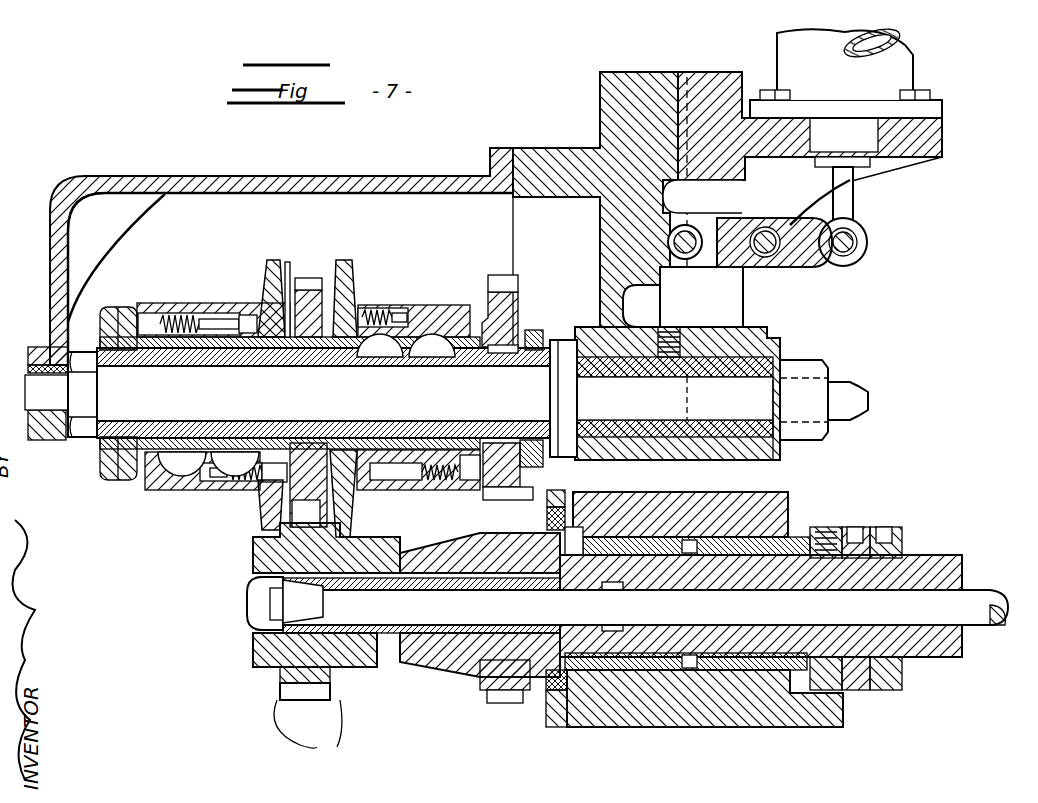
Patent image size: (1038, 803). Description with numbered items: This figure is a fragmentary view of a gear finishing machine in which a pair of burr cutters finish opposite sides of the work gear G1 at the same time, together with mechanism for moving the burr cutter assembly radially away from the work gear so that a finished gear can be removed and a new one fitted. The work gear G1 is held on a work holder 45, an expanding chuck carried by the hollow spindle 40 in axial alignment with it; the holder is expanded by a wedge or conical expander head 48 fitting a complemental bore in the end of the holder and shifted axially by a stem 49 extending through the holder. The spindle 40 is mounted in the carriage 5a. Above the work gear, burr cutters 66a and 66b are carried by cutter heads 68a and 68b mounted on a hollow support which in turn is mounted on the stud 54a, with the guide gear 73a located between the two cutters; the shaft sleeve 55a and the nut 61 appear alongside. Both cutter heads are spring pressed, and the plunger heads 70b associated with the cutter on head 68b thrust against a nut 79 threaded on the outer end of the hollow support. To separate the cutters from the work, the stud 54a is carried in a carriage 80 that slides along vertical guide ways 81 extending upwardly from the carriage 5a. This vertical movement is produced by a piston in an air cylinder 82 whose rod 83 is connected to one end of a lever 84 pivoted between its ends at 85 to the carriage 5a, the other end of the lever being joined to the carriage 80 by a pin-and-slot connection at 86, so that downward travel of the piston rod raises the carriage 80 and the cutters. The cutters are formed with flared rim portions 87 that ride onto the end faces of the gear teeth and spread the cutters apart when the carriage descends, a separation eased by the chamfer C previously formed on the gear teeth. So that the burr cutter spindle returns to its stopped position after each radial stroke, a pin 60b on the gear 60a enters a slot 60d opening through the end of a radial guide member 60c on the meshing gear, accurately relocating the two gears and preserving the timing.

The carriage 5a is at (720, 85).
The spindle 40 is at (727, 640).
The work holder 45 is at (367, 623).
The expander head 48 is at (270, 596).
The stem 49 is at (645, 607).
The stud 54a is at (324, 393).
The shaft sleeve 55a is at (240, 357).
The gear 60a is at (517, 297).
The pin 60b is at (530, 495).
The guide member 60c is at (583, 497).
The slot 60d is at (503, 480).
The nut 61 is at (490, 695).
The burr cutter 66a is at (355, 278).
The burr cutter 66b is at (266, 263).
The cutter head 68a is at (420, 295).
The cutter head 68b is at (200, 303).
The plunger heads 70b is at (150, 308).
The guide gear 73a is at (307, 280).
The nut 79 is at (115, 308).
The carriage 80 is at (600, 290).
The guide ways 81 is at (697, 80).
The air cylinder 82 is at (893, 77).
The piston rod 83 is at (843, 208).
The lever 84 is at (800, 263).
The pivot 85 is at (763, 228).
The pin-and-slot connection 86 is at (700, 291).
The flared rim portions 87 is at (282, 262).
The chamfer C is at (308, 736).
The work gear G1 is at (263, 553).